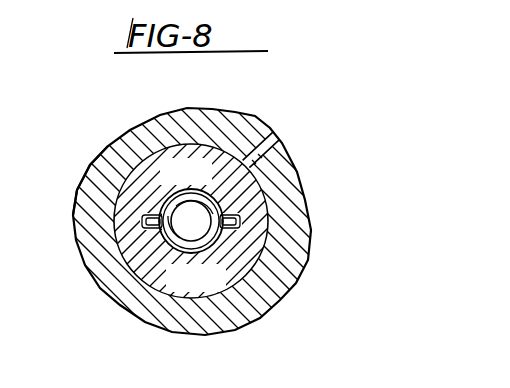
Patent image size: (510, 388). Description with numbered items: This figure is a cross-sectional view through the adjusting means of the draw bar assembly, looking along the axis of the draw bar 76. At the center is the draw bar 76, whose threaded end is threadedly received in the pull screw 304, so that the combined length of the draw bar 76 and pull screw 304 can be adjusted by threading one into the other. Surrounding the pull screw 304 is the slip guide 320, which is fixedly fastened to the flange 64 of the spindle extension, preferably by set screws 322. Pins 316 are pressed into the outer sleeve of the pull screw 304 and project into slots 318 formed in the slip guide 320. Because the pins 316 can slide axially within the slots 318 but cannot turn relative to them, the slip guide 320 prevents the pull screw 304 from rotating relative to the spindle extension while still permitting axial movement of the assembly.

The flange 64 is at (301, 274).
The draw bar 76 is at (184, 218).
The pull screw 304 is at (222, 266).
The pins 316 is at (240, 226).
The slots 318 is at (75, 222).
The slip guide 320 is at (210, 182).
The set screws 322 is at (258, 148).